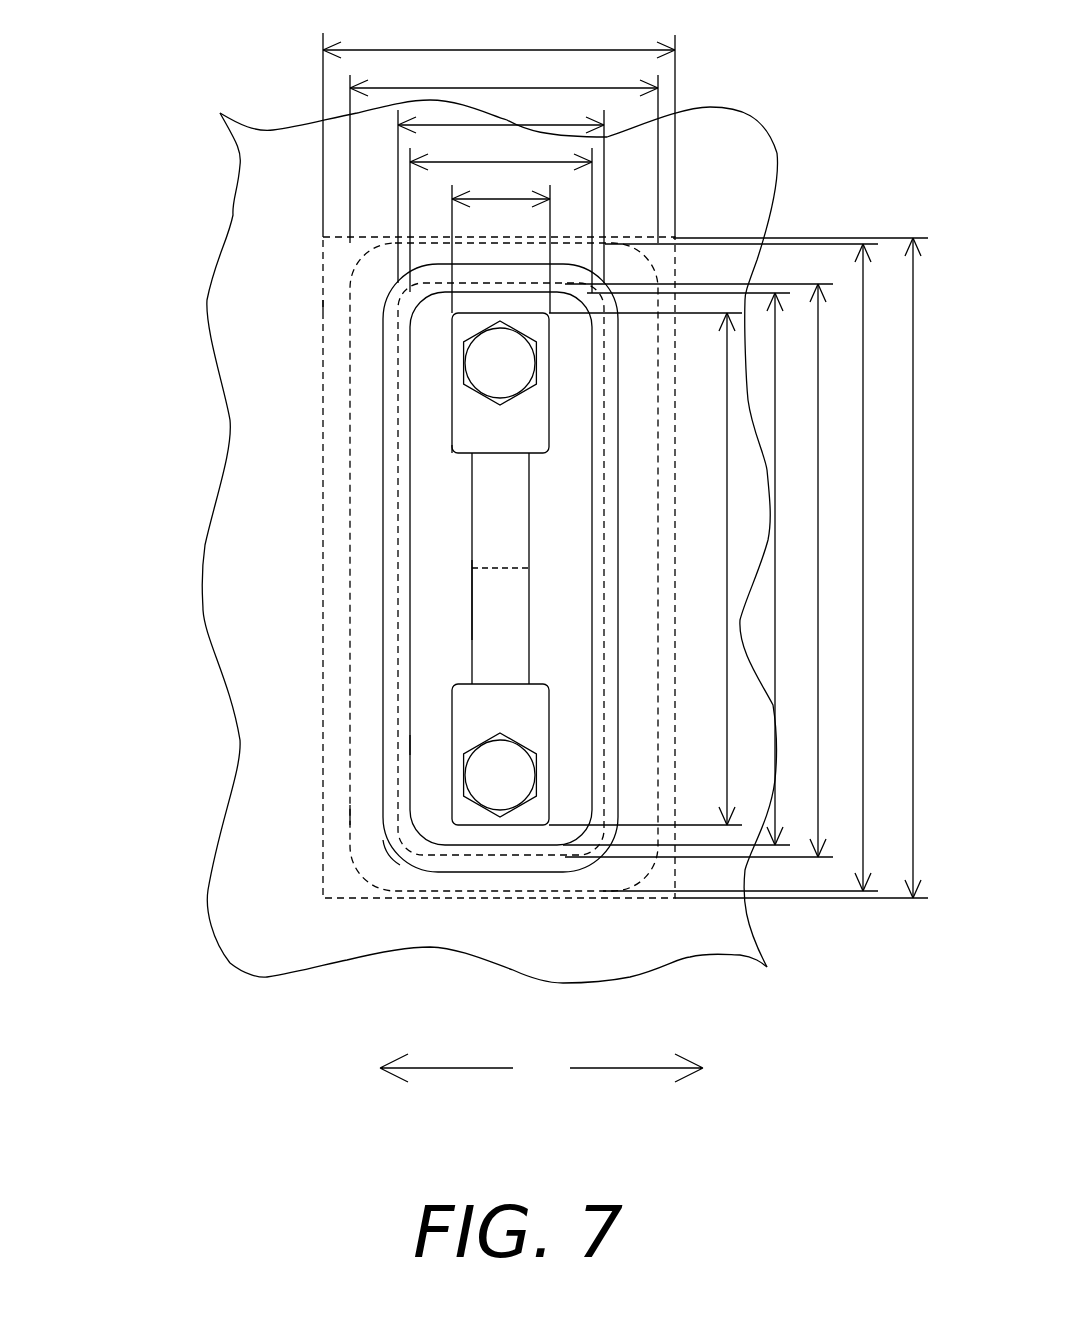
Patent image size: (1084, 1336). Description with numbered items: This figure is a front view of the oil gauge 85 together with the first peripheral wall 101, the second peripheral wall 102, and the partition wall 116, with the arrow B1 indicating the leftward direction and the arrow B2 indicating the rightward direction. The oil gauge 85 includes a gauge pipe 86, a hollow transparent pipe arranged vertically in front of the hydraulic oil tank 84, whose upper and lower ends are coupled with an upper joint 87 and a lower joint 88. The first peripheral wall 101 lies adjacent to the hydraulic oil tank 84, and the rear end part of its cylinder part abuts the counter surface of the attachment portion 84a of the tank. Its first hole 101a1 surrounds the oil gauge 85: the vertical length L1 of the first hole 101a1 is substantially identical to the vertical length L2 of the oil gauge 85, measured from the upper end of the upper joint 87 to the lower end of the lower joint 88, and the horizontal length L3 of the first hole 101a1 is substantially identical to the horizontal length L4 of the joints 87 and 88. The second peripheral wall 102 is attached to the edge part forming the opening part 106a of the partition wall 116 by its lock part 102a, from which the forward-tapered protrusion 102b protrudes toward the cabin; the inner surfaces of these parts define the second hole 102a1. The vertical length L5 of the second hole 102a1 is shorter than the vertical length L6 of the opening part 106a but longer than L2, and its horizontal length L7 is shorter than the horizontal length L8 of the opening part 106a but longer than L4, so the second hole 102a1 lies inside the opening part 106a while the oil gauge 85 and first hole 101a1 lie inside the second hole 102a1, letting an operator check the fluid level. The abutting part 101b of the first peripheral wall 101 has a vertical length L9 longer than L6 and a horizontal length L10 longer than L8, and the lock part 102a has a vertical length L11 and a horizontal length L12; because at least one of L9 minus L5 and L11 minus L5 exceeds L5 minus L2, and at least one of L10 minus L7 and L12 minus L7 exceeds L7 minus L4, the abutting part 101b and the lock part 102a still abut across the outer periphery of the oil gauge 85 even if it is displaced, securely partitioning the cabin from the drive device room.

The partition wall 116 is at (276, 997).
The first peripheral wall 101 is at (318, 254).
The abutting part 101b is at (322, 306).
The first hole 101a1 is at (450, 455).
The second peripheral wall 102 is at (342, 770).
The lock part 102a is at (347, 815).
The second hole 102a1 is at (417, 742).
The protrusion 102b is at (395, 862).
The opening part 106a is at (400, 545).
The gauge pipe 86 is at (468, 524).
The upper joint 87 is at (447, 377).
The lower joint 88 is at (447, 695).
The oil gauge 85 is at (470, 598).
The attachment portion 84a is at (295, 569).
The hydraulic oil tank 84 is at (460, 637).
The length in the horizontal direction of the abutting part L10 is at (493, 50).
The length in the horizontal direction of the lock part L12 is at (493, 88).
The length in the horizontal direction of the opening part L8 is at (497, 127).
The length in the horizontal direction of the second hole L7 is at (500, 163).
The length in the horizontal direction of the first hole L3 is at (672, 229).
The length in the horizontal direction of the oil gauge L4 is at (497, 199).
The length in the vertical direction of the second hole L5 is at (775, 542).
The length in the vertical direction of the opening part L6 is at (818, 560).
The length in the vertical direction of the lock part L11 is at (863, 545).
The length in the vertical direction of the abutting part L9 is at (913, 562).
The length in the vertical direction of the first hole L1 is at (800, 597).
The length in the vertical direction of the oil gauge L2 is at (775, 765).
The arrow indicating the leftward direction B1 is at (633, 1070).
The arrow indicating the rightward direction B2 is at (463, 1070).